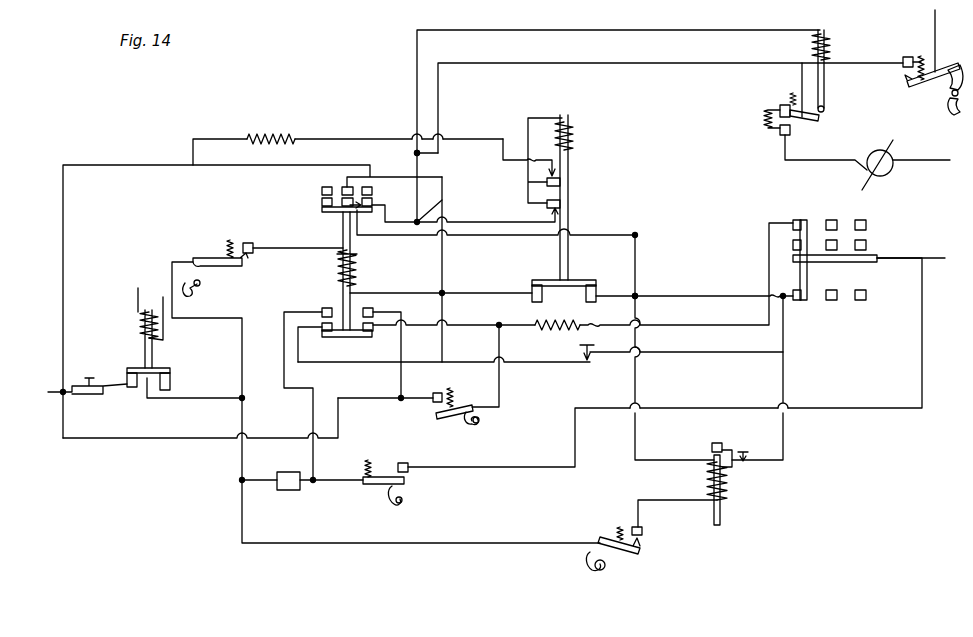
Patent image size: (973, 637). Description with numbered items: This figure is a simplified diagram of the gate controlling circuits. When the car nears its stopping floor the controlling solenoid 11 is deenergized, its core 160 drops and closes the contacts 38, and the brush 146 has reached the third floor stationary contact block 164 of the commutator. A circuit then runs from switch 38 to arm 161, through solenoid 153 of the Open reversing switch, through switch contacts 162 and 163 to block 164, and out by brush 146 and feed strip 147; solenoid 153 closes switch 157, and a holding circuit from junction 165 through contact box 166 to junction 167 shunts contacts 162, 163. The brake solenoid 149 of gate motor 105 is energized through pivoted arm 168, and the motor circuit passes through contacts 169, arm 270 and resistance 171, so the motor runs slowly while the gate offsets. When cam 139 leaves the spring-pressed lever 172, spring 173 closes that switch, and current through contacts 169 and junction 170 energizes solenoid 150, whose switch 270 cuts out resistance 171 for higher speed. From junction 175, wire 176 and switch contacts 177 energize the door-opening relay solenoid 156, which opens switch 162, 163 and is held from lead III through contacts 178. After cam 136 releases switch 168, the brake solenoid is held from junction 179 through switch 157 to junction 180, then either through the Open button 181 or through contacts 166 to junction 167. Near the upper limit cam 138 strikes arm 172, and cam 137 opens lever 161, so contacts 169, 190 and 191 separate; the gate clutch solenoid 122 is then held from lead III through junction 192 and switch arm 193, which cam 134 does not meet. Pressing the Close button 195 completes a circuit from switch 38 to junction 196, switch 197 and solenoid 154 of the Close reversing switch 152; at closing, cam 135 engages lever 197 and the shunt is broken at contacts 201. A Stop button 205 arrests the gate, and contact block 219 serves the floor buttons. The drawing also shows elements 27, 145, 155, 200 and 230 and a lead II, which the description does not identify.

The controlling solenoid 11 is at (139, 339).
The armature bracket 27 is at (170, 380).
The contacts 38 is at (135, 400).
The gate motor 105 is at (894, 160).
The gate clutch solenoid 122 is at (575, 329).
The cam 134 is at (480, 424).
The cam 135 is at (596, 562).
The cam 136 is at (403, 503).
The cam 137 is at (200, 295).
The cam 138 is at (948, 112).
The cam 139 is at (947, 95).
The contact bank 145 is at (866, 223).
The brush 146 is at (807, 221).
The feed strip 147 is at (872, 254).
The brake solenoid 149 is at (283, 493).
The two-speed switch solenoid 150 is at (815, 42).
The Close reversing switch 152 is at (714, 460).
The Open reversing switch solenoid 153 is at (341, 265).
The Close reversing switch solenoid 154 is at (708, 478).
The relay yoke 155 is at (576, 278).
The door-opening relay solenoid 156 is at (571, 132).
The switch 157 is at (347, 341).
The core 160 is at (168, 285).
The spring-held lever 161 is at (238, 264).
The switch contact 162 is at (531, 297).
The switch contact 163 is at (592, 303).
The third floor stationary contact block 164 is at (790, 304).
The junction 165 is at (445, 292).
The contact box 166 is at (337, 190).
The junction 167 is at (641, 296).
The pivoted arm 168 is at (408, 447).
The contacts 169 is at (373, 196).
The junction 170 is at (417, 153).
The resistance 171 is at (766, 117).
The spring-pressed lever 172 is at (906, 84).
The spring 173 is at (928, 44).
The junction 175 is at (433, 208).
The wire 176 is at (507, 223).
The switch contacts 177 is at (490, 138).
The switch contacts 178 is at (561, 183).
The junction 179 is at (313, 480).
The junction 180 is at (445, 364).
The Open button 181 is at (590, 360).
The contacts 190 is at (327, 308).
The contacts 191 is at (366, 312).
The junction 192 is at (405, 399).
The switch arm 193 is at (450, 422).
The Close button 195 is at (747, 461).
The junction 196 is at (240, 480).
The switch lever 197 is at (614, 536).
The contact fingers 200 is at (793, 220).
The contacts 201 is at (712, 445).
The Stop button 205 is at (73, 394).
The contact block 219 is at (793, 246).
The resistor 230 is at (270, 137).
The switch arm 270 is at (803, 120).
The line II is at (918, 260).
The lead III is at (45, 386).